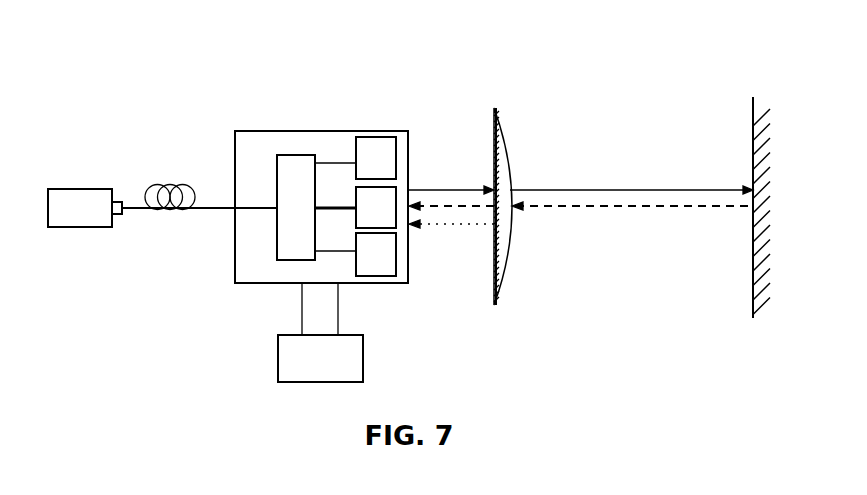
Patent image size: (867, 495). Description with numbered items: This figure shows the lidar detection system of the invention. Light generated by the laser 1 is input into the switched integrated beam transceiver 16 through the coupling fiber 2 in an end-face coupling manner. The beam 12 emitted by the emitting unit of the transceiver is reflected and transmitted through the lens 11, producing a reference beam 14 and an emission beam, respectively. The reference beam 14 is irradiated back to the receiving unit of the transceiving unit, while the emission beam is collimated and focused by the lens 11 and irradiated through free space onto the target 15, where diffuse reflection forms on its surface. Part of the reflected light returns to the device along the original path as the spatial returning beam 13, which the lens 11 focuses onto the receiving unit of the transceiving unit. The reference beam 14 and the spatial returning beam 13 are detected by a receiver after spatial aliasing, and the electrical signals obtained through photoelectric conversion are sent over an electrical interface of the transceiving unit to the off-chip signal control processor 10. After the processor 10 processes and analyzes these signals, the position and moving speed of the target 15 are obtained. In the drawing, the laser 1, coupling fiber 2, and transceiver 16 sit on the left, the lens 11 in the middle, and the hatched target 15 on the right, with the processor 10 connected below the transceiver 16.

The laser 1 is at (81, 227).
The coupling fiber 2 is at (202, 208).
The switched integrated beam transceiver 16 is at (319, 131).
The off-chip signal control processor 10 is at (278, 366).
The lens 11 is at (503, 128).
The beam 12 is at (721, 182).
The spatial returning beam 13 is at (534, 210).
The reference beam 14 is at (456, 228).
The target 15 is at (745, 287).